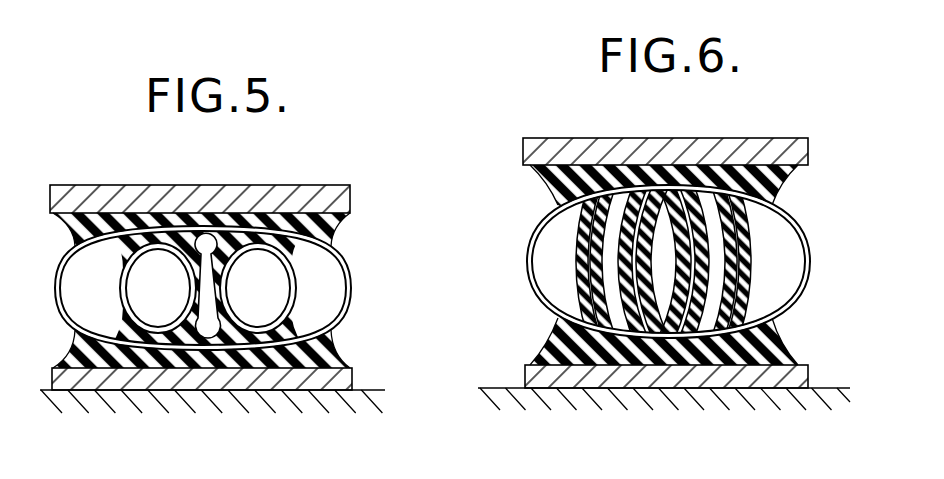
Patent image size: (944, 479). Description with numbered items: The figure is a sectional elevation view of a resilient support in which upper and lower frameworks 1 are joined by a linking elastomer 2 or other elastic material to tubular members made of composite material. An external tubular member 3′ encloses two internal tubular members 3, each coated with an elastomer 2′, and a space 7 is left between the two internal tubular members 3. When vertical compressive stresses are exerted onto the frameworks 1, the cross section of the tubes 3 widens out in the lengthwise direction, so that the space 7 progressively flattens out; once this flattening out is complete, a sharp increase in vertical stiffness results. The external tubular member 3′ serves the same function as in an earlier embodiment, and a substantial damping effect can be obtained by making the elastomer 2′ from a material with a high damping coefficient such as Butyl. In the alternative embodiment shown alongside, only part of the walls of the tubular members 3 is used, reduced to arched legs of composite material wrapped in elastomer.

In FIG. 5, the framework 1 is at (258, 198).
In FIG. 6, the framework 1 is at (736, 150).
In FIG. 5, the linking elastomer 2 is at (318, 232).
In FIG. 6, the linking elastomer 2 is at (768, 192).
In FIG. 5, the elastomer coating 2′ is at (193, 276).
In FIG. 5, the internal tubular member 3 is at (131, 296).
In FIG. 5, the external tubular member 3′ is at (353, 284).
In FIG. 6, the external tubular member 3′ is at (531, 245).
In FIG. 5, the space 7 is at (204, 238).